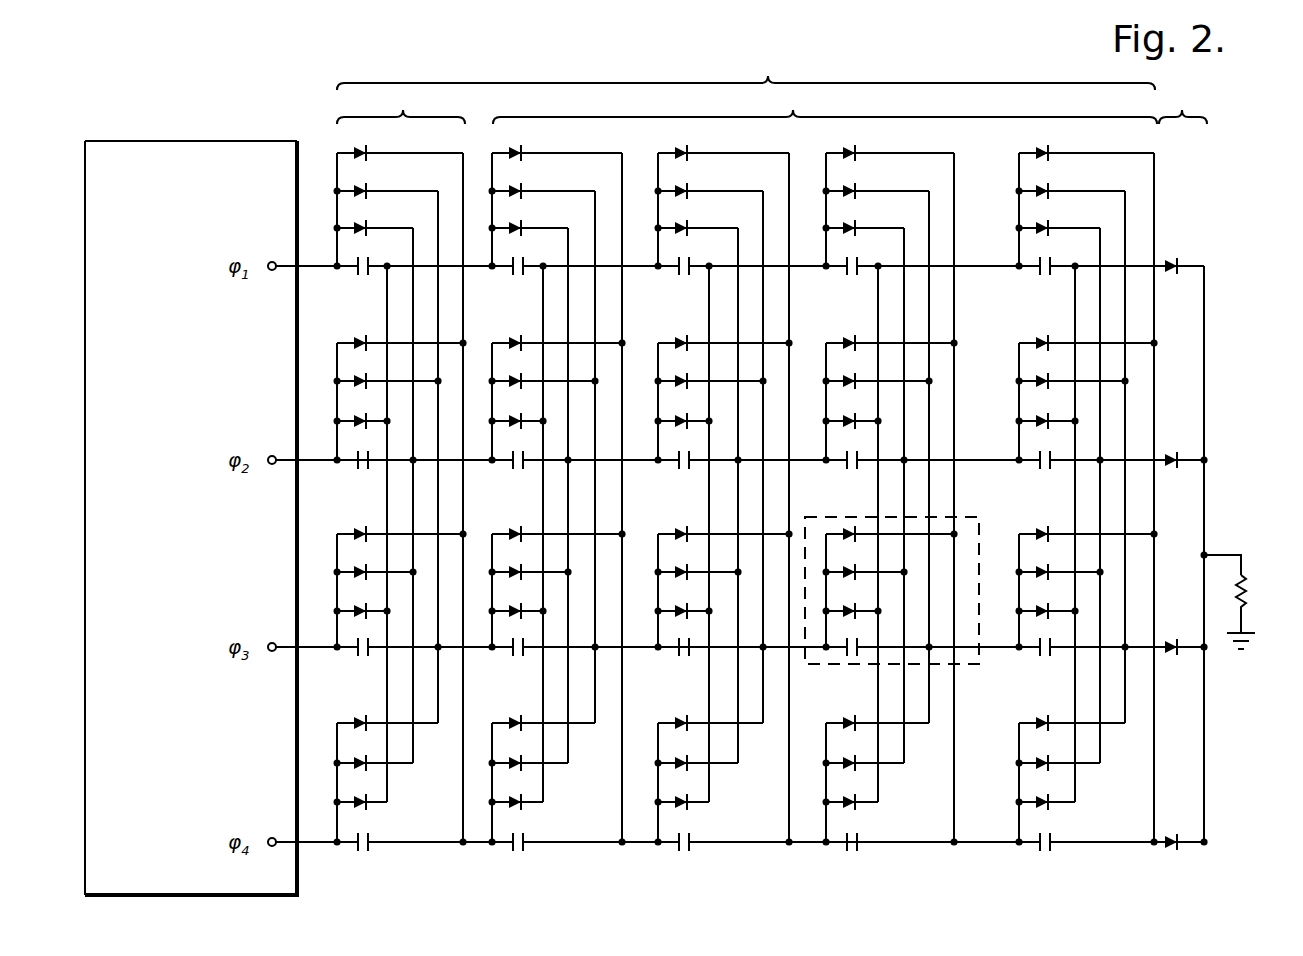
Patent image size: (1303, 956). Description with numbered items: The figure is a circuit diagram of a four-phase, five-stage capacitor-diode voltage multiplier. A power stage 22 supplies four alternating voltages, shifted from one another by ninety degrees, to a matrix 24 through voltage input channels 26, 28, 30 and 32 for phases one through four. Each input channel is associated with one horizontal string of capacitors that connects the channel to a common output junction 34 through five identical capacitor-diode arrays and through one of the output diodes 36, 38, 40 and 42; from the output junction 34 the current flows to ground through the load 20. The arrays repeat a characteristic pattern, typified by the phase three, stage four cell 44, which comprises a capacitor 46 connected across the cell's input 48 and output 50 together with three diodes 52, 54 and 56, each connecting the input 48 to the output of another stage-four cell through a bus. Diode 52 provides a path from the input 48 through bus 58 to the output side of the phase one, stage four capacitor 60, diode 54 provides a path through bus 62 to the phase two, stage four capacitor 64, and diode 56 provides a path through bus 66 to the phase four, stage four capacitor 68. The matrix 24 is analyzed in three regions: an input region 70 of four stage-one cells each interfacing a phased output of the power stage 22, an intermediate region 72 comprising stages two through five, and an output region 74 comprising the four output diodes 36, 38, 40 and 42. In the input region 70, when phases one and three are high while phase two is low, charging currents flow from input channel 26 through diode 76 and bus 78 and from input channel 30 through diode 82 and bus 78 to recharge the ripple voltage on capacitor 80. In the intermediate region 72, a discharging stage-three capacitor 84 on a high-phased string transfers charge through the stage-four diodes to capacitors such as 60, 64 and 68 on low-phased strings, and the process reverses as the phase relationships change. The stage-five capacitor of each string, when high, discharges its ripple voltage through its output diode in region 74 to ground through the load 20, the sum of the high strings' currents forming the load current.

The load 20 is at (1245, 592).
The power stage 22 is at (297, 140).
The matrix 24 is at (746, 66).
The voltage input channel 26 is at (307, 266).
The voltage input channel 28 is at (310, 460).
The voltage input channel 30 is at (309, 647).
The voltage input channel 32 is at (310, 842).
The output junction 34 is at (1208, 555).
The output diode 36 is at (1178, 266).
The output diode 38 is at (1177, 459).
The output diode 40 is at (1177, 647).
The output diode 42 is at (1176, 842).
The cell 44 is at (998, 512).
The capacitor 46 is at (857, 645).
The input 48 is at (813, 663).
The output 50 is at (942, 652).
The diode 52 is at (850, 610).
The diode 54 is at (857, 560).
The diode 56 is at (845, 530).
The bus 58 is at (878, 671).
The capacitor 60 is at (857, 262).
The bus 62 is at (904, 475).
The capacitor 64 is at (851, 465).
The bus 66 is at (955, 773).
The capacitor 68 is at (862, 838).
The input region 70 is at (401, 104).
The intermediate region 72 is at (825, 104).
The output region 74 is at (1183, 104).
The diode 76 is at (365, 228).
The bus 78 is at (413, 285).
The capacitor 80 is at (362, 466).
The diode 82 is at (365, 570).
The capacitor 84 is at (677, 652).